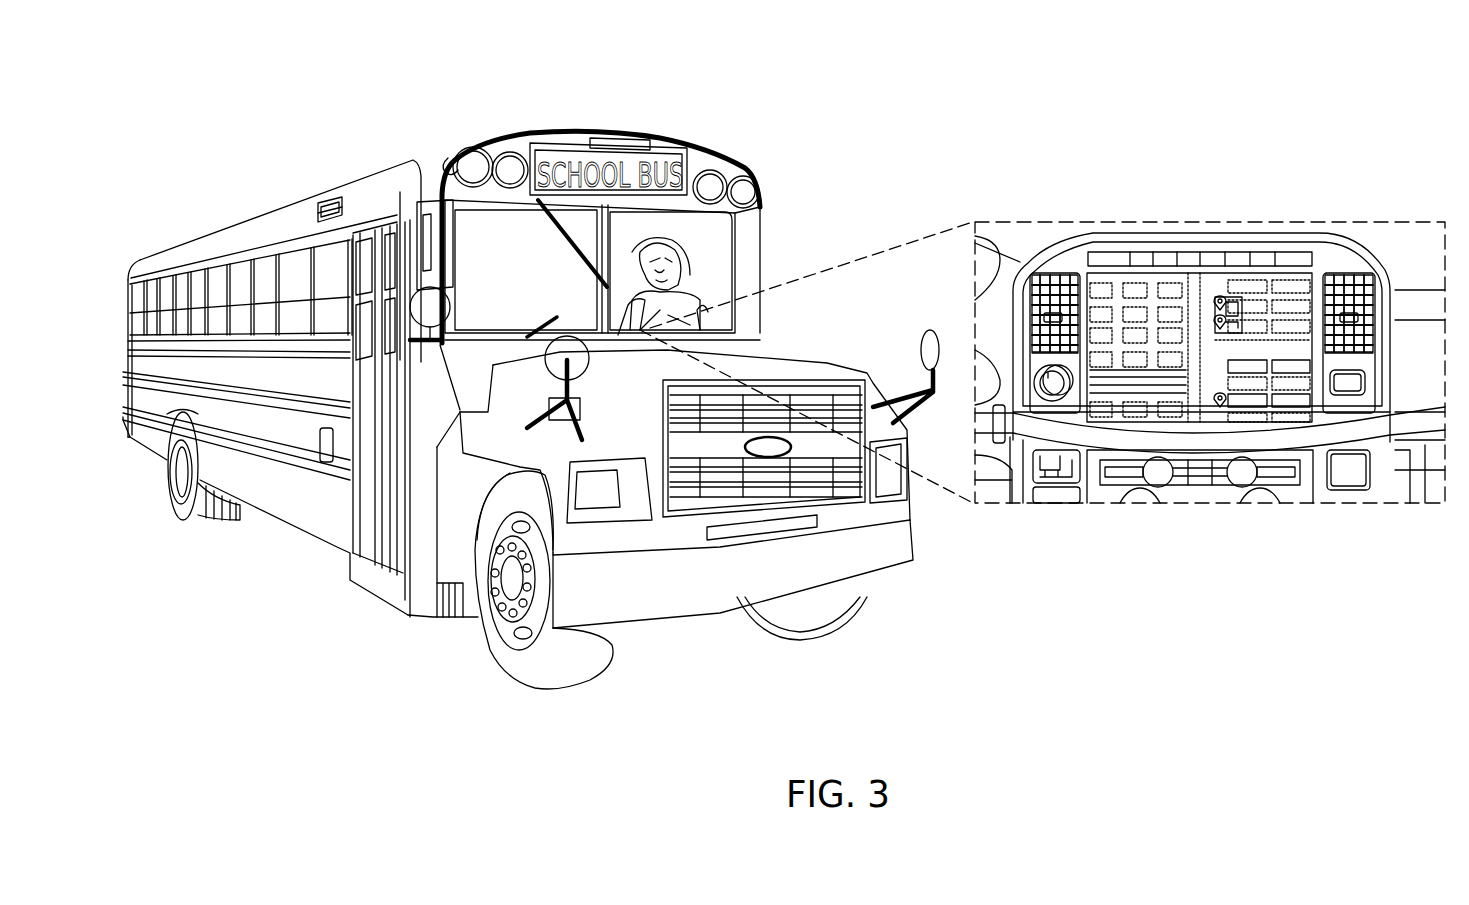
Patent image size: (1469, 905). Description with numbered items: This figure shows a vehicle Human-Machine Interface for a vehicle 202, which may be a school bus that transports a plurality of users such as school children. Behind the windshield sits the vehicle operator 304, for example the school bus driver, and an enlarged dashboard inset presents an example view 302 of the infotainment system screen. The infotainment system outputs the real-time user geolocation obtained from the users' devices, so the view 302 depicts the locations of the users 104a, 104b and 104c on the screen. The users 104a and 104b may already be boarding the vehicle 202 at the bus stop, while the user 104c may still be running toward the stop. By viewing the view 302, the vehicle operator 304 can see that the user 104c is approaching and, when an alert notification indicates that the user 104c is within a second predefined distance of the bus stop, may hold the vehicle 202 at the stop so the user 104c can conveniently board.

The vehicle 202 is at (602, 133).
The example view of an infotainment system screen 302 is at (1352, 220).
The vehicle operator 304 is at (680, 270).
The user 104a is at (1224, 290).
The user 104b is at (1215, 316).
The user 104c is at (1220, 406).